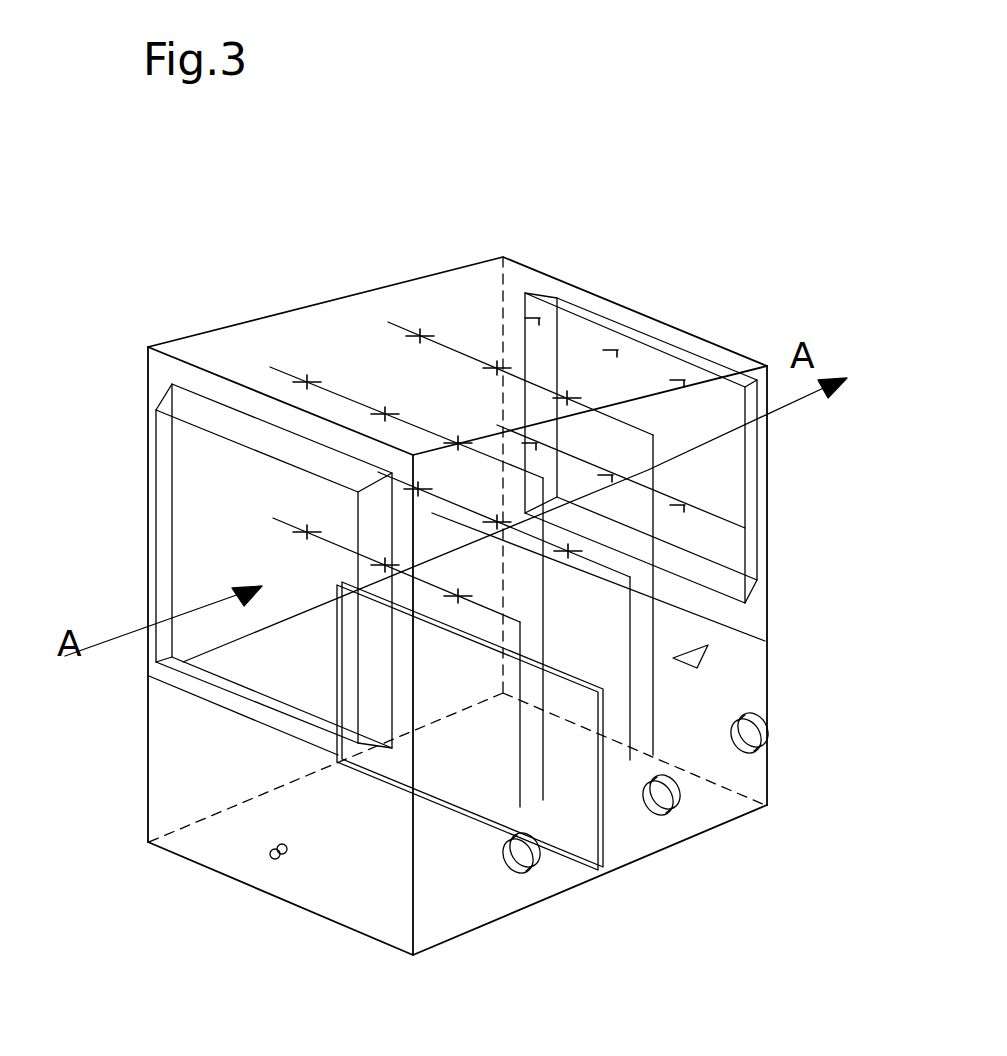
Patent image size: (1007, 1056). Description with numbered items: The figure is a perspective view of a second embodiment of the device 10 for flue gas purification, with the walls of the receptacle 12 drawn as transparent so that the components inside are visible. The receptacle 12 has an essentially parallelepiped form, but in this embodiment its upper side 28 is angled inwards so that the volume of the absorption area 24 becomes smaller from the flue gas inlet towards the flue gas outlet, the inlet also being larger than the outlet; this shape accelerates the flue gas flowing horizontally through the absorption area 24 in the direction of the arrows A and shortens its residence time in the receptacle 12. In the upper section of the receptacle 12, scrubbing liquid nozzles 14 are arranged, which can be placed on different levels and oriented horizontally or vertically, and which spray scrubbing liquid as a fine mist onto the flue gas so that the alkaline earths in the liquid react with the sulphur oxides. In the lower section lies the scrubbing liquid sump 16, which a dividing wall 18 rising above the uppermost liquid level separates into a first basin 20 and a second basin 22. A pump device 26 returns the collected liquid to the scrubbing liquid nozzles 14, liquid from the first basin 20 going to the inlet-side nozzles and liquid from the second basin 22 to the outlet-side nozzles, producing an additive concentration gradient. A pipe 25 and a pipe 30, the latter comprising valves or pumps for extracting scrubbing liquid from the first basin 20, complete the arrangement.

The device 10 is at (342, 246).
The receptacle 12 is at (598, 288).
The scrubbing liquid nozzles 14 is at (307, 382).
The scrubbing liquid sump 16 is at (202, 569).
The dividing wall 18 is at (575, 817).
The first basin 20 is at (448, 898).
The second basin 22 is at (640, 815).
The absorption area 24 is at (503, 532).
The pipe 25 is at (766, 673).
The pump device 26 is at (750, 740).
The upper side 28 is at (462, 298).
The pipe 30 is at (270, 856).